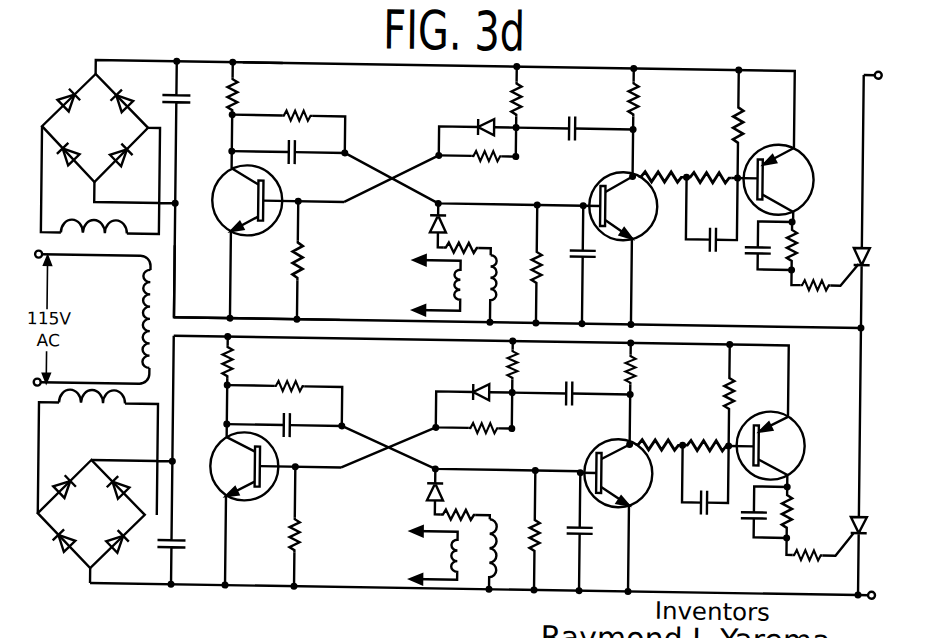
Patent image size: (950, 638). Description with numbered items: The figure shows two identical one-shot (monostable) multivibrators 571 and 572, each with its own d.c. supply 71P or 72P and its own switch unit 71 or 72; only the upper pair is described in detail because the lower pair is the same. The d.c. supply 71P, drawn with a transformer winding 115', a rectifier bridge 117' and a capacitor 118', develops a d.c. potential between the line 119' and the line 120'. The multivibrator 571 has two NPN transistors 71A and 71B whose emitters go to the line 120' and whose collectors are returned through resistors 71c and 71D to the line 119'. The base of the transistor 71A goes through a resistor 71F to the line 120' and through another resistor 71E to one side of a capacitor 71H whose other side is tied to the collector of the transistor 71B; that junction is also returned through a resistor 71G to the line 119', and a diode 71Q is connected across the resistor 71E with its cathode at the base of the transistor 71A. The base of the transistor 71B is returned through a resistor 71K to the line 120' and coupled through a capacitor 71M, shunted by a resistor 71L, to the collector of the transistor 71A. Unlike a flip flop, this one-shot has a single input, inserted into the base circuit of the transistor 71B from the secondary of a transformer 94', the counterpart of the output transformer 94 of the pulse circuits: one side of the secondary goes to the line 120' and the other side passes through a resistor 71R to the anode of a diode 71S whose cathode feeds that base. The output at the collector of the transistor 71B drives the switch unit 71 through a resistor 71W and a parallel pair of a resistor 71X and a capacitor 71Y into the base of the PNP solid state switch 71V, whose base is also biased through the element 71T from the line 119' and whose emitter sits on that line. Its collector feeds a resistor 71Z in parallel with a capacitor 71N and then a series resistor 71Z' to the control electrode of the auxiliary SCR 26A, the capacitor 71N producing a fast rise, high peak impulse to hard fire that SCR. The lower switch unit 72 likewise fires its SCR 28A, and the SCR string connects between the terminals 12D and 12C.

The d.c. supply 71P is at (205, 56).
The line 119' is at (279, 43).
The multivibrator 571 is at (483, 99).
The switch unit 71 is at (815, 56).
The terminal 12D is at (876, 65).
The resistor 71c is at (236, 95).
The filter capacitor 118' is at (192, 189).
The rectifier bridge 117' is at (94, 128).
The transformer primary winding 115' is at (92, 319).
The line 120' is at (274, 282).
The NPN transistor 71A is at (215, 204).
The resistor 71L is at (311, 119).
The diode 71Q is at (476, 127).
The capacitor 71M is at (295, 160).
The resistor 71E is at (484, 166).
The resistor 71F is at (302, 256).
The diode 71S is at (428, 229).
The resistor 71R is at (454, 242).
The transformer 94' is at (455, 288).
The resistor 71K is at (540, 268).
The resistor 71G is at (521, 97).
The capacitor 71H is at (577, 135).
The resistor 71D is at (637, 99).
The NPN transistor 71B is at (588, 200).
The resistor 71W is at (660, 172).
The resistor 71X is at (714, 172).
The biasing transistor 71T is at (742, 121).
The capacitor 71Y is at (707, 248).
The solid state switch 71V is at (800, 159).
The capacitor 71N is at (750, 254).
The resistor 71Z is at (812, 254).
The resistor 71Z' is at (820, 292).
The auxiliary SCR 26A is at (852, 256).
The multivibrator 572 is at (465, 374).
The output transformer 94 is at (453, 553).
The switch unit 72 is at (818, 581).
The silicon controlled rectifier 28A is at (850, 520).
The terminal 12C is at (874, 593).
The d.c. supply 72P is at (213, 632).